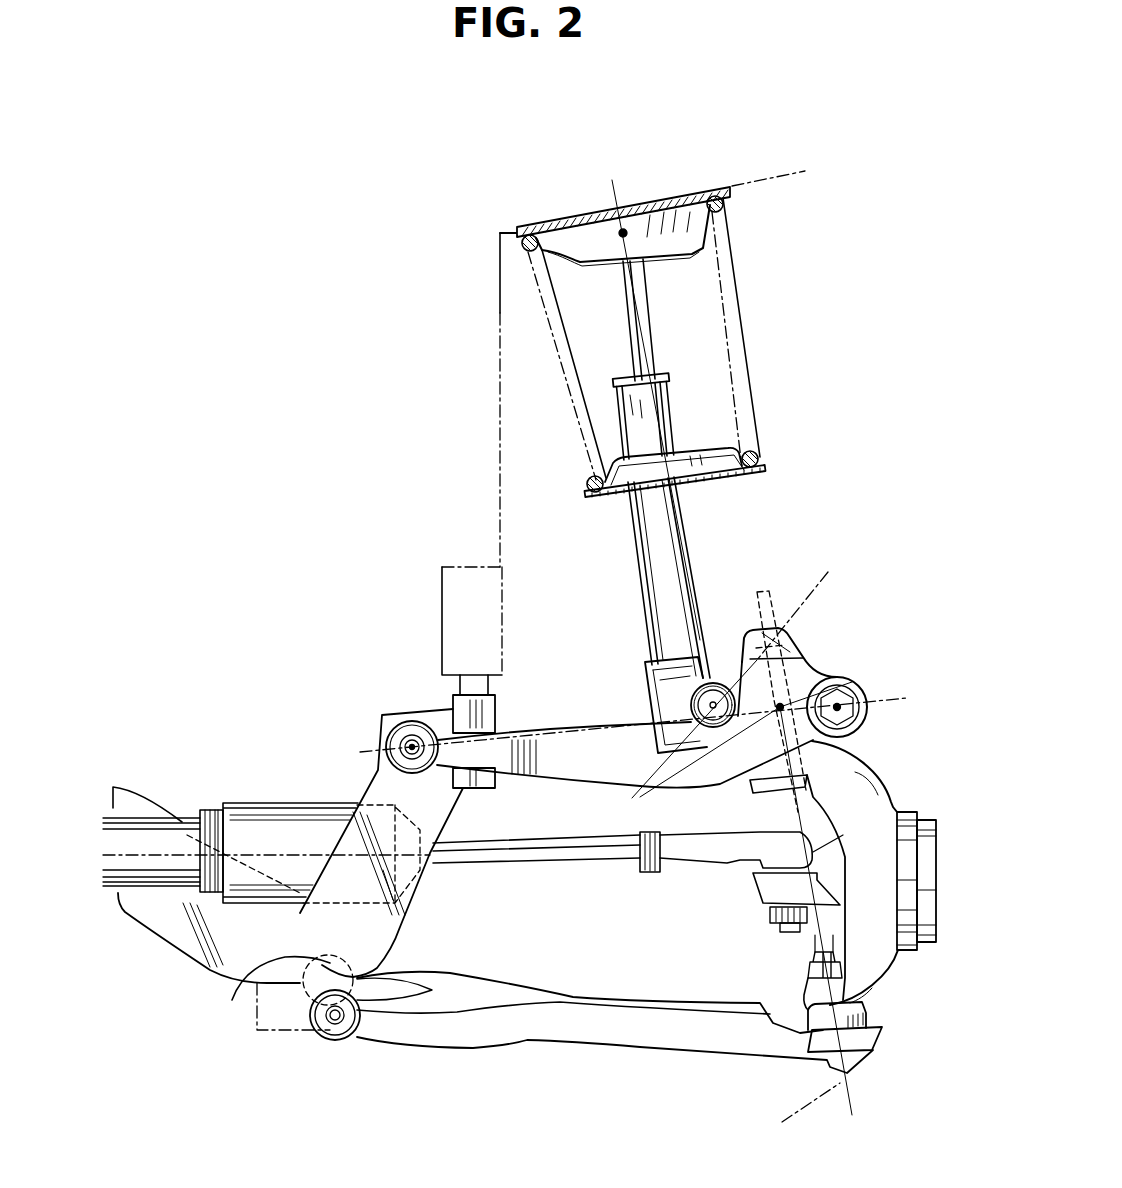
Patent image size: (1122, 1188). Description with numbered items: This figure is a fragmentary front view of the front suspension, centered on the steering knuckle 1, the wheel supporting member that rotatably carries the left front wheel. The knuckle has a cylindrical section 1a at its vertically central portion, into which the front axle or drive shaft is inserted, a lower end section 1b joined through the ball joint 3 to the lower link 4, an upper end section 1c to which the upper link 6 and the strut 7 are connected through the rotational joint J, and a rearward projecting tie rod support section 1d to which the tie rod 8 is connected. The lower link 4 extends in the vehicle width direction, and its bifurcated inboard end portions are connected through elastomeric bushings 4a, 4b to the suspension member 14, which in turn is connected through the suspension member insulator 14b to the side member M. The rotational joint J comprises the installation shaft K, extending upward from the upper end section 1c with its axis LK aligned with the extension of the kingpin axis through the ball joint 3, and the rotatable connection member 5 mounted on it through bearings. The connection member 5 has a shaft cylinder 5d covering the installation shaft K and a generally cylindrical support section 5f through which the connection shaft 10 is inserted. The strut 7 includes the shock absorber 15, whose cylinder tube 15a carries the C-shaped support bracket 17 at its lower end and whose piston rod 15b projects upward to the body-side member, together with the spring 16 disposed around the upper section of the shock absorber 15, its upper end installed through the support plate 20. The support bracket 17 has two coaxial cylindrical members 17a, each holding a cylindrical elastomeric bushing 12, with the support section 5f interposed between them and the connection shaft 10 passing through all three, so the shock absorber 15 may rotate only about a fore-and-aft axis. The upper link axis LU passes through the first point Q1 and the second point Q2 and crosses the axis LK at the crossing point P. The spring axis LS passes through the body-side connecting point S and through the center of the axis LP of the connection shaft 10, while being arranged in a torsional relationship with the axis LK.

The steering knuckle 1 is at (893, 800).
The cylindrical section 1a is at (937, 905).
The lower end section 1b is at (883, 980).
The upper end section 1c is at (857, 783).
The tie rod support section 1d is at (803, 830).
The ball joint 3 is at (864, 1012).
The lower link 4 is at (578, 1033).
The elastomeric bushing 4a is at (336, 1032).
The elastomeric bushing 4b is at (232, 1000).
The rotatable connection member 5 is at (838, 670).
The shaft cylinder 5d is at (834, 652).
The support section 5f is at (723, 662).
The upper link 6 is at (556, 762).
The strut 7 is at (784, 448).
The tie rod 8 is at (556, 862).
The connection shaft 10 is at (713, 728).
The cylindrical elastomeric bushing 12 is at (762, 622).
The suspension member 14 is at (733, 187).
The suspension member insulator 14b is at (457, 702).
The shock absorber 15 is at (686, 389).
The cylinder tube 15a is at (672, 430).
The piston rod 15b is at (648, 318).
The spring 16 is at (758, 383).
The support bracket 17 is at (690, 710).
The cylindrical member 17a is at (697, 683).
The support plate 20 is at (690, 228).
The connecting point S is at (624, 230).
The side member M is at (442, 588).
The installation shaft K is at (738, 676).
The rotational joint J is at (836, 650).
The crossing point P is at (854, 733).
The first point Q1 is at (858, 684).
The second point Q2 is at (400, 748).
The upper link axis LU is at (552, 735).
The spring axis LS is at (698, 620).
The axis of the connection shaft LP is at (728, 751).
The axis of the installation shaft LK is at (800, 931).